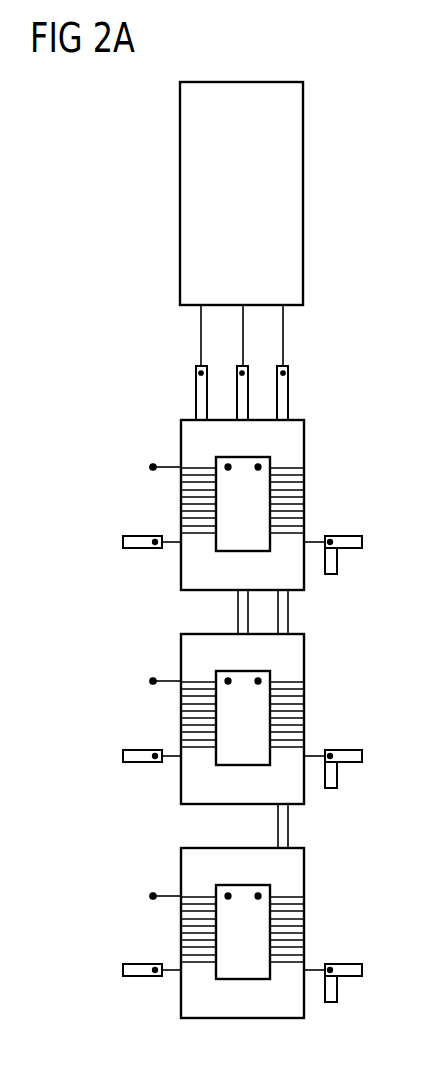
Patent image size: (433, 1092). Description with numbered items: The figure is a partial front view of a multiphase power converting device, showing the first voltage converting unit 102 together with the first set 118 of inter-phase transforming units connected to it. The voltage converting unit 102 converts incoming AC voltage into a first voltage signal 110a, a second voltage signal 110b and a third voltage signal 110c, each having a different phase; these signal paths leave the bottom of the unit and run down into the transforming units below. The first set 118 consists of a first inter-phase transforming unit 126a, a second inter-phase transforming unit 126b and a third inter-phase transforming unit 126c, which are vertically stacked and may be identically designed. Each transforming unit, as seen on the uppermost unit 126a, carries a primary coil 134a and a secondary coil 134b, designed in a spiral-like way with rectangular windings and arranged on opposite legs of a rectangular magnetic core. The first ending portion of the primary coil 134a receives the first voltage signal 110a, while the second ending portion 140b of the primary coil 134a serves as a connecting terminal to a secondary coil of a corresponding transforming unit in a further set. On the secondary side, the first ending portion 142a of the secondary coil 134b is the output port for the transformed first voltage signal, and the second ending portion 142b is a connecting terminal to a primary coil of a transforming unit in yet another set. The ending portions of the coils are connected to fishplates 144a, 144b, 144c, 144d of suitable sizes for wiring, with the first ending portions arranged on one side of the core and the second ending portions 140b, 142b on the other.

The voltage converting unit 102 is at (305, 193).
The set of inter-phase transforming units 118 is at (88, 360).
The first voltage signal 110a is at (201, 337).
The second voltage signal 110b is at (243, 342).
The third voltage signal 110c is at (283, 325).
The fishplate 144a is at (197, 395).
The fishplate 144b is at (364, 538).
The fishplate 144c is at (338, 560).
The fishplate 144d is at (123, 540).
The first ending portion of the secondary coil 142a is at (153, 467).
The second ending portion of the secondary coil 142b is at (165, 545).
The first inter-phase transforming unit 126a is at (229, 505).
The second inter-phase transforming unit 126b is at (118, 713).
The third inter-phase transforming unit 126c is at (118, 933).
The primary coil 134a is at (304, 468).
The secondary coil 134b is at (181, 510).
The second ending portion of the primary coil 140b is at (313, 540).